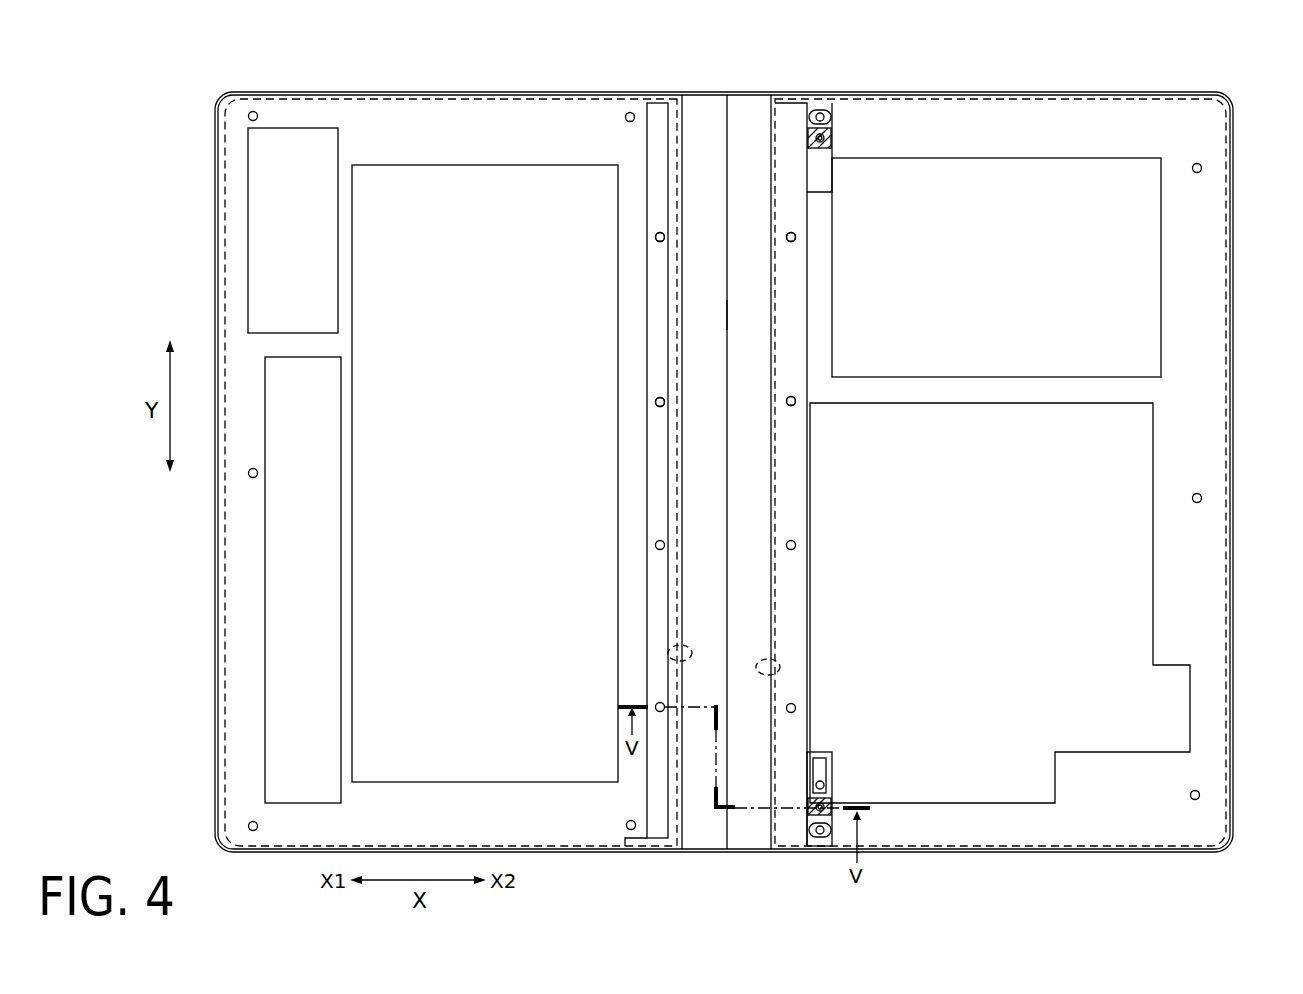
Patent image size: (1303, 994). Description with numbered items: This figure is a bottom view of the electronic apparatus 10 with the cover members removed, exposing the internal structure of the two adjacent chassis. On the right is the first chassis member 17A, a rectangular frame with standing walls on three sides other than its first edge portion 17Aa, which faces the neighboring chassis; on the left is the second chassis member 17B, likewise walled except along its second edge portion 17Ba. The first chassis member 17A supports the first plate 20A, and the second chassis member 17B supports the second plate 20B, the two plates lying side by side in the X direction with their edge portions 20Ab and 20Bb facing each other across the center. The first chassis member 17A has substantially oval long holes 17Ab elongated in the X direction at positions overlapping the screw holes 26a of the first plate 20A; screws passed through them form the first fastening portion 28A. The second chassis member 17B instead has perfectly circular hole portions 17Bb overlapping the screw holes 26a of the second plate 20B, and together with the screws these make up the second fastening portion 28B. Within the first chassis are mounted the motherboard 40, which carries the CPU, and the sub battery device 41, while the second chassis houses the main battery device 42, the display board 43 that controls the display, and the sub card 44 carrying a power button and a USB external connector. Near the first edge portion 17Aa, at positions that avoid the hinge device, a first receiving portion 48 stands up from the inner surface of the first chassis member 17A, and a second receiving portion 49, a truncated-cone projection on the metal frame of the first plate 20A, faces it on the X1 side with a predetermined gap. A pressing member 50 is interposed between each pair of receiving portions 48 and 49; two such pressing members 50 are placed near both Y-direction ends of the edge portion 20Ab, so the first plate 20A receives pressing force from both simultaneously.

The electronic apparatus 10 is at (169, 47).
The second chassis member 17B is at (396, 85).
The first chassis member 17A is at (1011, 85).
The first edge portion 17Aa is at (727, 308).
The second edge portion 17Ba is at (727, 320).
The hole portion 17Bb is at (303, 47).
The long hole 17Ab is at (855, 47).
The screw hole 26a is at (726, 237).
The second fastening portion 28B is at (660, 402).
The first fastening portion 28A is at (791, 401).
The second plate 20B is at (539, 860).
The first plate 20A is at (970, 860).
The edge portion of the second plate 20Bb is at (668, 655).
The edge portion of the first plate 20Ab is at (780, 667).
The motherboard 40 is at (1016, 792).
The sub battery device 41 is at (1078, 185).
The main battery device 42 is at (487, 185).
The display board 43 is at (290, 622).
The sub card 44 is at (252, 222).
The first receiving portion 48 is at (833, 128).
The second receiving portion 49 is at (830, 137).
The pressing member 50 is at (833, 152).